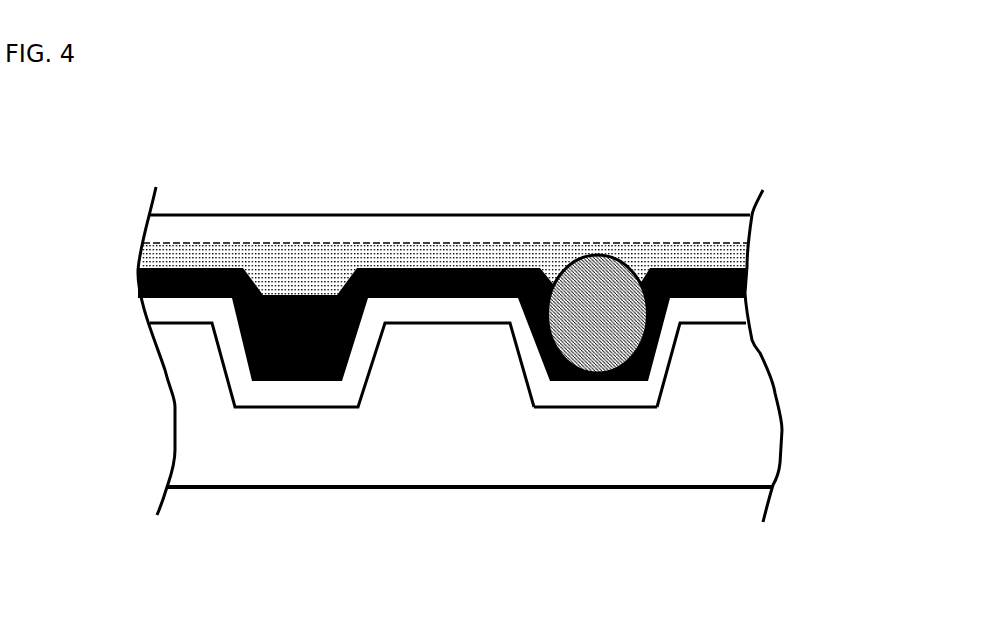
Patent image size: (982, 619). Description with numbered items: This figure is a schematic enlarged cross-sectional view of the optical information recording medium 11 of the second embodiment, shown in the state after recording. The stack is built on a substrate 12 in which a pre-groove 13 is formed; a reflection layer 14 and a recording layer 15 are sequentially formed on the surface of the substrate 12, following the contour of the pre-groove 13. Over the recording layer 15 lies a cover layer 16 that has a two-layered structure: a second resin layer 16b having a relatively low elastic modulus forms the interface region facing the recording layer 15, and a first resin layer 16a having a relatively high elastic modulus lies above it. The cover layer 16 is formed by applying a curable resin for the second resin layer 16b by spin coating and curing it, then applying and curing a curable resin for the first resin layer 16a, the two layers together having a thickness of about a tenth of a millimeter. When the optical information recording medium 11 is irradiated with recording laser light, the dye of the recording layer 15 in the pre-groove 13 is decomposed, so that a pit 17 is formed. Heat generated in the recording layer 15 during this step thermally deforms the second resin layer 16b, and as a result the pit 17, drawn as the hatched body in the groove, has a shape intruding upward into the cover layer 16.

The optical information recording medium 11 is at (490, 195).
The substrate 12 is at (732, 417).
The pre-groove 13 is at (600, 407).
The reflection layer 14 is at (757, 313).
The recording layer 15 is at (757, 292).
The cover layer 16 is at (778, 268).
The first resin layer 16a is at (622, 228).
The second resin layer 16b is at (692, 250).
The pit 17 is at (588, 280).